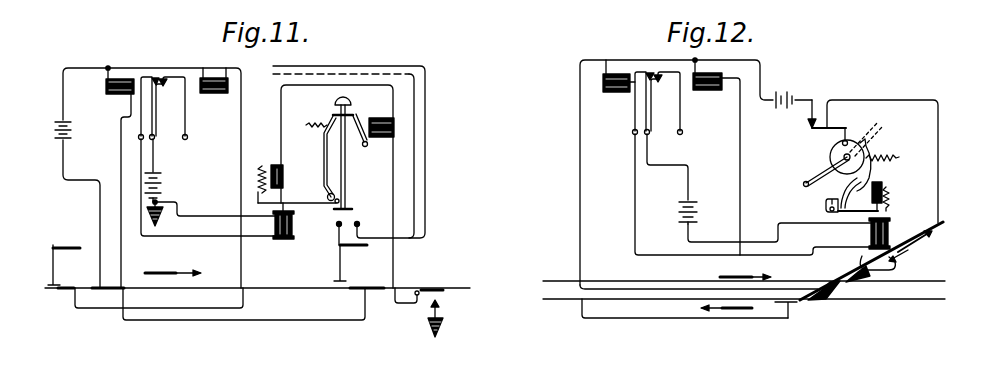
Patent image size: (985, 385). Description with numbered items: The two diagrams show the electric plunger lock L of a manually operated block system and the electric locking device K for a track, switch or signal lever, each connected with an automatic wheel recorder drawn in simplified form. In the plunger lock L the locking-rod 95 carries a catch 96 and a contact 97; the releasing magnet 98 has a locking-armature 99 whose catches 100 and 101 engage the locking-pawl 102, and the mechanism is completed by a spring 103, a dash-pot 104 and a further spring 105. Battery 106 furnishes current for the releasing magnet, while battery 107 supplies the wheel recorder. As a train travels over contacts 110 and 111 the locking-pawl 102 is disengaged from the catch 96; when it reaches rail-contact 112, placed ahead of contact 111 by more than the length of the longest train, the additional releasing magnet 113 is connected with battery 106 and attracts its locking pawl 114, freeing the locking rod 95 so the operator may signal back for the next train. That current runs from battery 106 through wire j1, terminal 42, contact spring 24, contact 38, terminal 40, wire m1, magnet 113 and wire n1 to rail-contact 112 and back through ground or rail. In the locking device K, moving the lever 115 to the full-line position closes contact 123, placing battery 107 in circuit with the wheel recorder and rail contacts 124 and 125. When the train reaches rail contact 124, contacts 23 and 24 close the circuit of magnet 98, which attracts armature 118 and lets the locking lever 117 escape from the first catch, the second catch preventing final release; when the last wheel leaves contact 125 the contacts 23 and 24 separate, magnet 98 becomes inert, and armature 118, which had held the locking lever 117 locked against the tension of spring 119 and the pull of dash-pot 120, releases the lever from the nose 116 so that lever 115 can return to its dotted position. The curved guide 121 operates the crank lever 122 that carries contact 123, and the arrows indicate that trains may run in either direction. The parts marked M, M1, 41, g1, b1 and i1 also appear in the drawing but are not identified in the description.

In FIG. 11, the contact 23 is at (147, 77).
In FIG. 12, the contact 23 is at (646, 72).
In FIG. 11, the contact spring 24 is at (165, 88).
In FIG. 12, the contact spring 24 is at (659, 84).
In FIG. 11, the contact 38 is at (181, 77).
In FIG. 12, the contact 38 is at (676, 72).
In FIG. 11, the terminal 40 is at (186, 140).
In FIG. 12, the terminal 40 is at (683, 133).
In FIG. 11, the armature pivot 41 is at (138, 138).
In FIG. 12, the armature pivot 41 is at (632, 133).
In FIG. 11, the terminal 42 is at (155, 140).
In FIG. 12, the terminal 42 is at (649, 135).
In FIG. 11, the locking-rod 95 is at (352, 105).
In FIG. 11, the catch 96 is at (338, 104).
In FIG. 11, the contact 97 is at (353, 209).
In FIG. 11, the releasing magnet 98 is at (281, 240).
In FIG. 12, the releasing magnet 98 is at (889, 232).
In FIG. 11, the locking-armature 99 is at (300, 205).
In FIG. 11, the catch 100 is at (336, 195).
In FIG. 11, the catch 101 is at (340, 201).
In FIG. 11, the locking-pawl 102 is at (325, 176).
In FIG. 11, the spring 103 is at (315, 128).
In FIG. 11, the dash-pot 104 is at (323, 168).
In FIG. 11, the spring 105 is at (262, 167).
In FIG. 11, the battery 106 is at (163, 190).
In FIG. 12, the battery 106 is at (698, 214).
In FIG. 11, the battery 107 is at (72, 130).
In FIG. 12, the battery 107 is at (785, 92).
In FIG. 11, the contact 110 is at (75, 288).
In FIG. 11, the contact 111 is at (357, 288).
In FIG. 11, the rail-contact 112 is at (422, 288).
In FIG. 11, the releasing magnet 113 is at (396, 126).
In FIG. 11, the locking pawl 114 is at (374, 151).
In FIG. 12, the track-switch-or signal lever 115 is at (806, 182).
In FIG. 12, the nose 116 is at (864, 148).
In FIG. 12, the locking lever 117 is at (846, 188).
In FIG. 12, the magnet armature 118 is at (826, 209).
In FIG. 12, the spring 119 is at (890, 196).
In FIG. 12, the dash-pot 120 is at (883, 186).
In FIG. 12, the curved guide 121 is at (830, 152).
In FIG. 12, the crank lever 122 is at (847, 140).
In FIG. 12, the contact 123 is at (812, 129).
In FIG. 12, the rail contact 124 is at (798, 314).
In FIG. 12, the rail contact 125 is at (897, 261).
In FIG. 11, the relay magnet M is at (106, 87).
In FIG. 12, the relay magnet M is at (603, 83).
In FIG. 11, the relay magnet M1 is at (228, 87).
In FIG. 12, the relay magnet M1 is at (706, 91).
In FIG. 11, the electric plunger lock L is at (337, 186).
In FIG. 12, the electric locking device K is at (846, 161).
In FIG. 11, the ground g1 is at (161, 218).
In FIG. 11, the wire b1 is at (252, 115).
In FIG. 11, the wire m1 is at (255, 130).
In FIG. 11, the wire i1 is at (108, 172).
In FIG. 11, the wire j1 is at (166, 152).
In FIG. 11, the wire n1 is at (404, 192).